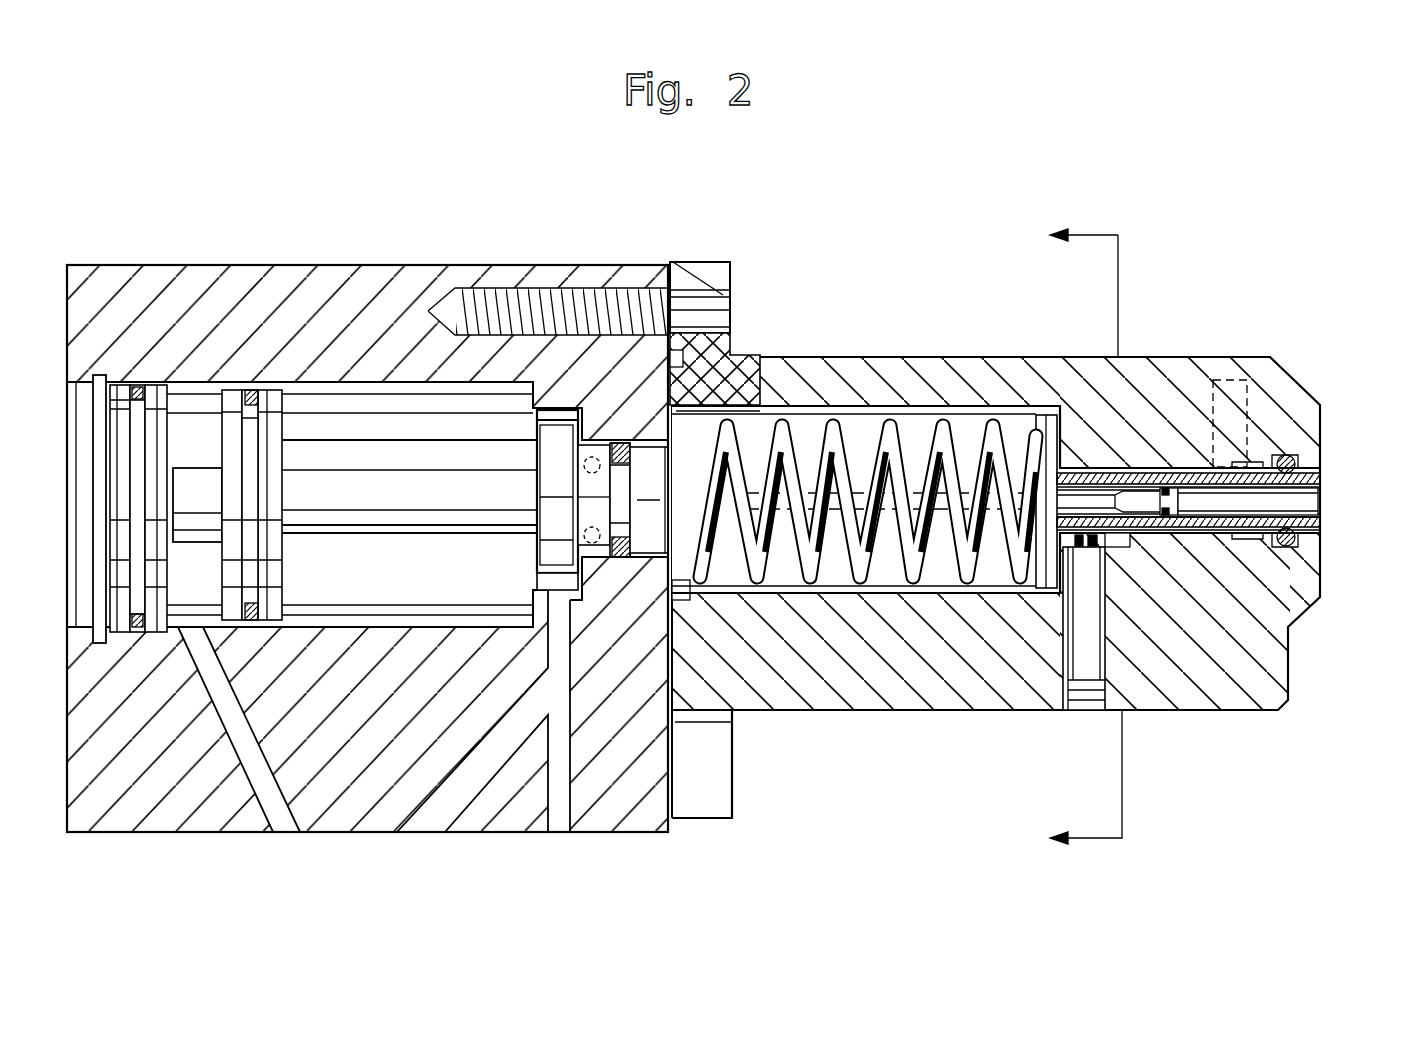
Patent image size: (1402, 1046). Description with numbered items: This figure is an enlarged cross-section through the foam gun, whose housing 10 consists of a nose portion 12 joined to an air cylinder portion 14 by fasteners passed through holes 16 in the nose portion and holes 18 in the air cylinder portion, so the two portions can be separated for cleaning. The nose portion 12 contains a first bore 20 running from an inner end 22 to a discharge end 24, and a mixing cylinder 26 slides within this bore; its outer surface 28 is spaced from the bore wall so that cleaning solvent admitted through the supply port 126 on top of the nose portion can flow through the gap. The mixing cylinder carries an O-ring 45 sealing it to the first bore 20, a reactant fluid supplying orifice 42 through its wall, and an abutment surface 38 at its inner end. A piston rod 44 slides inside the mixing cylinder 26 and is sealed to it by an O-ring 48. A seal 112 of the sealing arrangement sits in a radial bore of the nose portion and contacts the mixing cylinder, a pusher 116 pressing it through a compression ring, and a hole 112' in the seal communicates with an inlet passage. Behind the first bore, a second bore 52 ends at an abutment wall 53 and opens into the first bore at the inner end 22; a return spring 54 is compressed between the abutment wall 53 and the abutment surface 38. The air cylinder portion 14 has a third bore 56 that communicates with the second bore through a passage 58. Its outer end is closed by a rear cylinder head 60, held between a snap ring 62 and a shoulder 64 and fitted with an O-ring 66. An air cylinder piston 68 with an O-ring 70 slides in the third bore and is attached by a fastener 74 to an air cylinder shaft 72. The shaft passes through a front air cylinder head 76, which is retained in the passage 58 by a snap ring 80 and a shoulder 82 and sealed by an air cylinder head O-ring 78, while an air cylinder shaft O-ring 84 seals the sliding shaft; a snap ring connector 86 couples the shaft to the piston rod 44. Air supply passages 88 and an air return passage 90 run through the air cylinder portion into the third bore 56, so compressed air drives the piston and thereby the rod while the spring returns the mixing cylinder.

The housing 10 is at (722, 529).
The nose portion 12 is at (997, 712).
The air cylinder portion 14 is at (388, 400).
The holes 16 is at (722, 330).
The holes 18 is at (665, 265).
The first bore 20 is at (1305, 470).
The inner end 22 is at (1080, 473).
The discharge end 24 is at (1320, 478).
The mixing cylinder 26 is at (1096, 478).
The outer surface 28 is at (1283, 458).
The abutment surface 38 is at (1043, 417).
The reactant fluid supplying orifice 42 is at (1117, 532).
The piston rod 44 is at (1125, 488).
The O-ring 45 is at (1292, 537).
The O-ring 48 is at (1163, 490).
The second bore 52 is at (860, 420).
The abutment wall 53 is at (748, 420).
The return spring 54 is at (940, 420).
The third bore 56 is at (400, 335).
The passage 58 is at (640, 565).
The rear cylinder head 60 is at (163, 387).
The snap ring 62 is at (103, 380).
The shoulder 64 is at (232, 390).
The O-ring 66 is at (140, 384).
The air cylinder piston 68 is at (270, 440).
The O-ring 70 is at (250, 390).
The air cylinder shaft 72 is at (448, 488).
The fastener 74 is at (198, 485).
The front air cylinder head 76 is at (548, 550).
The air cylinder head O-ring 78 is at (700, 395).
The snap ring 80 is at (747, 438).
The shoulder 82 is at (565, 420).
The air cylinder shaft O-ring 84 is at (612, 447).
The snap ring connector 86 is at (726, 490).
The air supply passages 88 is at (562, 815).
The air return passage 90 is at (285, 830).
The seal 112 is at (1194, 649).
The hole 112' is at (1070, 649).
The pusher 116 is at (1107, 680).
The supply port 126 is at (1235, 400).